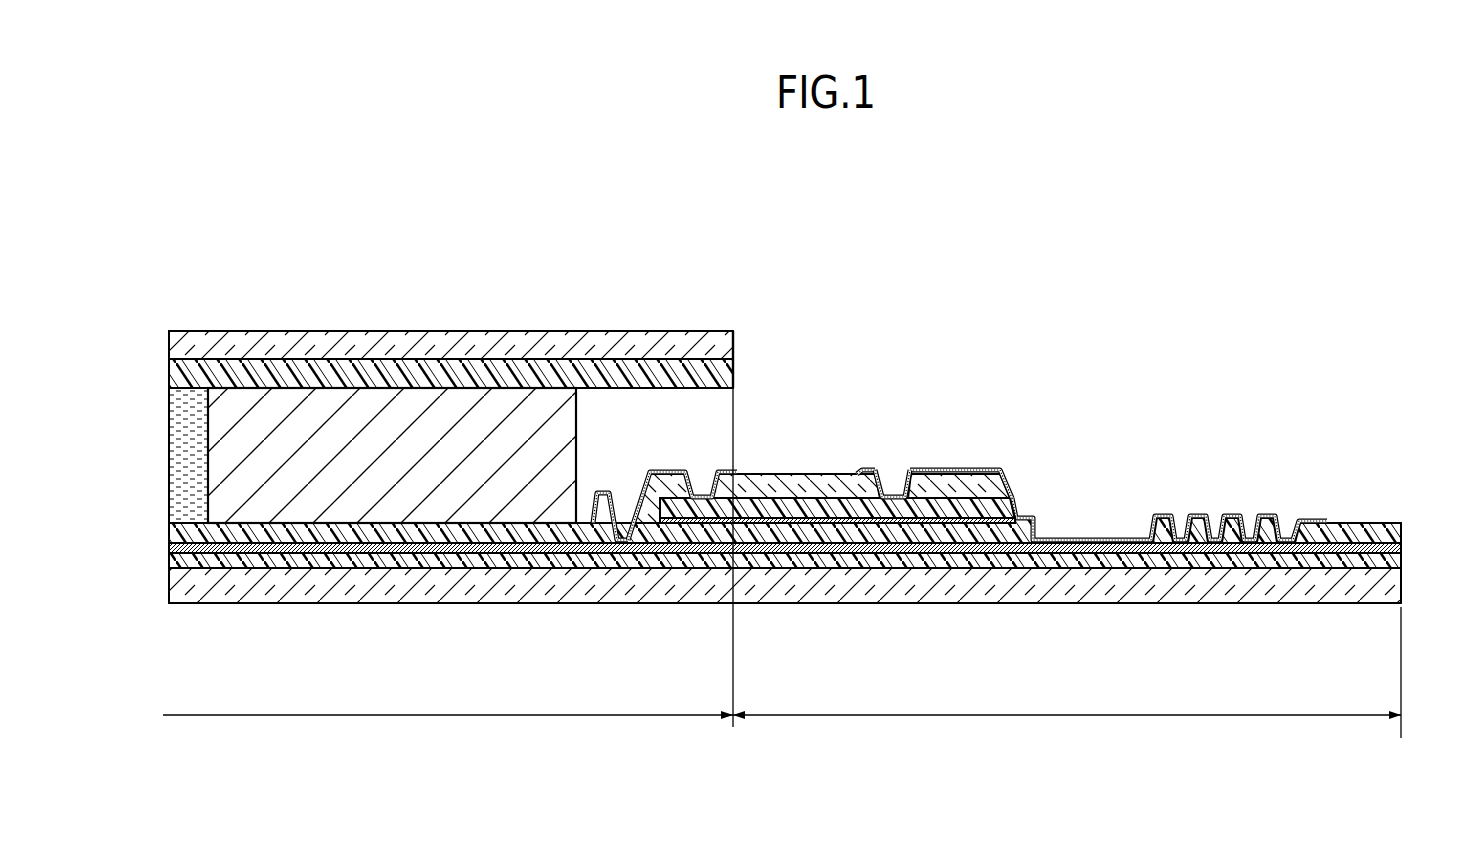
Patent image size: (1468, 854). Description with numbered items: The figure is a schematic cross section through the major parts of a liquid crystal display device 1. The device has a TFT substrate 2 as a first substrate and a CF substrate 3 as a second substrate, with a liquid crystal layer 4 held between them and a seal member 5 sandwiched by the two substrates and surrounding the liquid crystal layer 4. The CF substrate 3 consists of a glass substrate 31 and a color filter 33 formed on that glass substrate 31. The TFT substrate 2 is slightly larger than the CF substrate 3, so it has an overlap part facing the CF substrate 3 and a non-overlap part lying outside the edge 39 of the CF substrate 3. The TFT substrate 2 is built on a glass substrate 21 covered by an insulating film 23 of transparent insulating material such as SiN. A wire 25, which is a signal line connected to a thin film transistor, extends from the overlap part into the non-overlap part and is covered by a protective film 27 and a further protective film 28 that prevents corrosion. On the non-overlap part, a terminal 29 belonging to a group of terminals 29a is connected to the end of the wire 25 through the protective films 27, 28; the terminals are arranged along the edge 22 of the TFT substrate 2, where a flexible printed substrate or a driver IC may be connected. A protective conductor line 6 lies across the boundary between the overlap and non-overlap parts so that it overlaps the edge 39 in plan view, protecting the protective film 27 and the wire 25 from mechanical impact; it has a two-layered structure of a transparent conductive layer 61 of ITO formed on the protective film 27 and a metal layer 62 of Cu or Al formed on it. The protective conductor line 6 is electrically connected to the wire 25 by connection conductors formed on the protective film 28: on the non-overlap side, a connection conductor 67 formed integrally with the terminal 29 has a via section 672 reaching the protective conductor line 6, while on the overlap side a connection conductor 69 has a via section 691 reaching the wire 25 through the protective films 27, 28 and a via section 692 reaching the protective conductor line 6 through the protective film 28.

The liquid crystal display device 1 is at (1224, 296).
The TFT substrate 2 is at (252, 615).
The CF substrate 3 is at (678, 322).
The liquid crystal layer 4 is at (195, 412).
The seal member 5 is at (278, 415).
The protective conductor line 6 is at (837, 445).
The glass substrate 21 is at (418, 590).
The edge 22 is at (1403, 585).
The insulating film 23 is at (500, 562).
The wire 25 is at (636, 552).
The protective film 27 is at (945, 533).
The protective film 28 is at (756, 483).
The terminal 29 is at (1095, 537).
The group of terminals 29a is at (1275, 488).
The glass substrate 31 is at (556, 345).
The color filter 33 is at (412, 372).
The edge 39 is at (736, 345).
The transparent conductive layer 61 is at (852, 520).
The metal layer 62 is at (803, 507).
The connection conductor 67 is at (934, 440).
The via section 672 is at (895, 480).
The connection conductor 69 is at (662, 470).
The via section 691 is at (633, 495).
The via section 692 is at (705, 480).